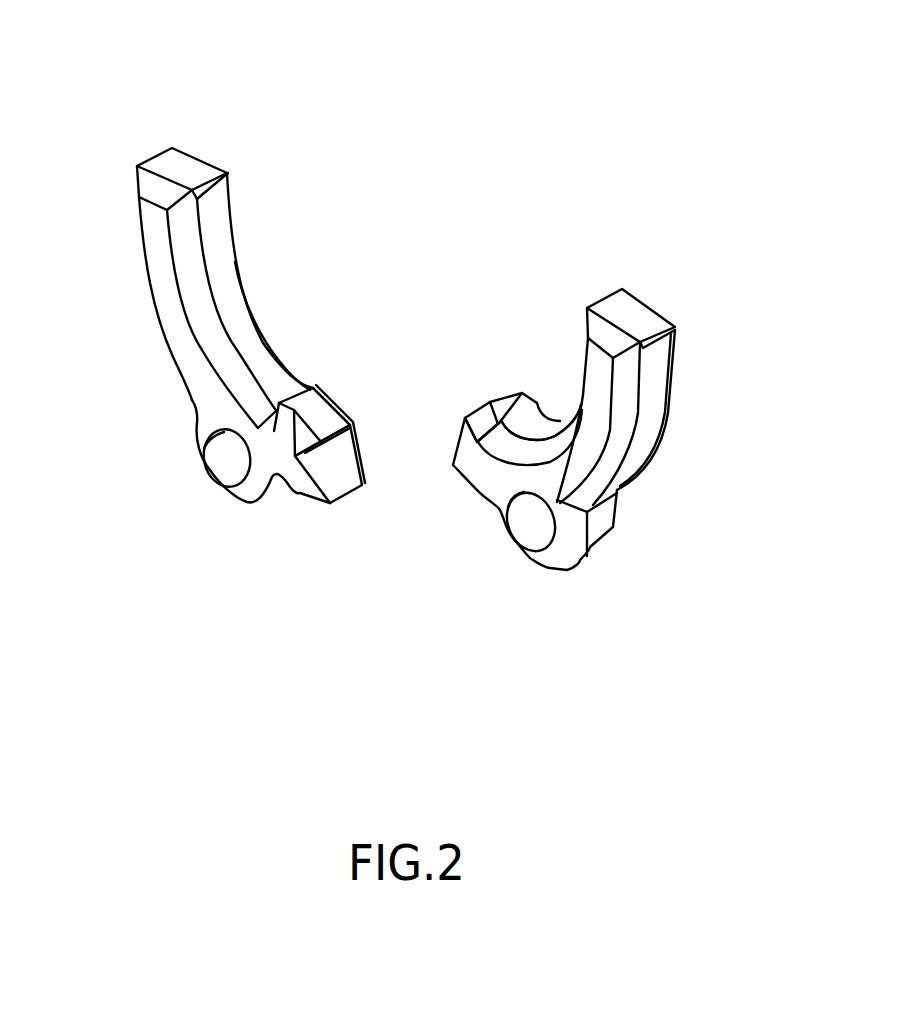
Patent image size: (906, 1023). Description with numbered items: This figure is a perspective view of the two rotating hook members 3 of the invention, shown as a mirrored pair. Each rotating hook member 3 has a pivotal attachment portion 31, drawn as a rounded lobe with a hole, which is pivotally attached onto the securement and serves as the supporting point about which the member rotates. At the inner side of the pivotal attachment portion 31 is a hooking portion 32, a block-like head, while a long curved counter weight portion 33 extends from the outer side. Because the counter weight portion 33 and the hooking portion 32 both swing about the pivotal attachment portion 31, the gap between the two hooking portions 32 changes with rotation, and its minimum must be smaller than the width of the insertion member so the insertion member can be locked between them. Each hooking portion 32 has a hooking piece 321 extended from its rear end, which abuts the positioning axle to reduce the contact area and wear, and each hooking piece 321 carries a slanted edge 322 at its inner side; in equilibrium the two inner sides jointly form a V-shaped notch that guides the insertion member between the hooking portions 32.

The rotating hook member 3 is at (112, 125).
The pivotal attachment portion 31 is at (263, 495).
The hooking portion 32 is at (283, 480).
The hooking piece 321 is at (312, 387).
The slanted edge 322 is at (333, 398).
The counter weight portion 33 is at (168, 330).